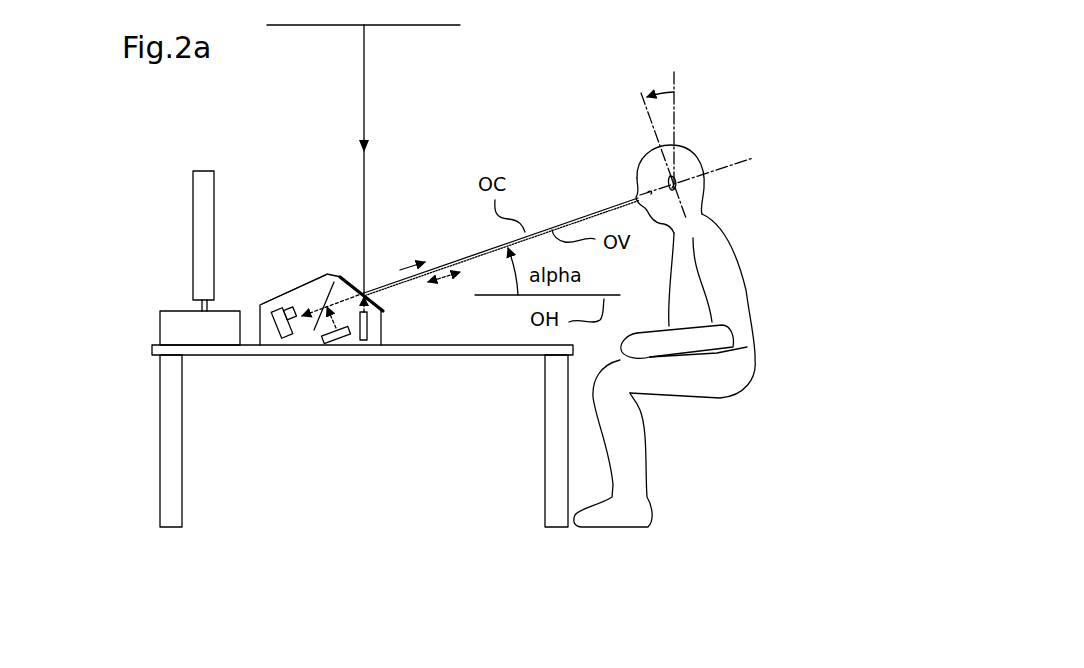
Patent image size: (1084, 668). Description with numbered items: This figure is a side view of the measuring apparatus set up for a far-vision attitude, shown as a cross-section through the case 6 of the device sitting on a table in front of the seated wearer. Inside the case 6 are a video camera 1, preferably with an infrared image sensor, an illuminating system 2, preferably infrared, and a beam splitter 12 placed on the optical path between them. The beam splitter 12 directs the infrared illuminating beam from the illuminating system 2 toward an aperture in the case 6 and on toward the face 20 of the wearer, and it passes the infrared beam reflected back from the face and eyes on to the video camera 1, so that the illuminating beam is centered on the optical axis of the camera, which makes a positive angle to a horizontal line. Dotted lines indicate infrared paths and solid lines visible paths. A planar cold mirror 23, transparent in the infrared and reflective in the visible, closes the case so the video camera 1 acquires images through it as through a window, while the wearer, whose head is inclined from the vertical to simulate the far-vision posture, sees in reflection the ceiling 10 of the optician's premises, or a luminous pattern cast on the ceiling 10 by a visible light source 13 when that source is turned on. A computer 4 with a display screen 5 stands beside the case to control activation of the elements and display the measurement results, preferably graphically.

The video camera 1 is at (280, 311).
The illuminating system 2 is at (327, 348).
The computer 4 is at (175, 318).
The display screen 5 is at (200, 195).
The case 6 is at (318, 273).
The ceiling 10 is at (420, 27).
The beam splitter 12 is at (300, 338).
The light source 13 is at (397, 346).
The face of the wearer 20 is at (634, 178).
The planar mirror 23 is at (353, 277).